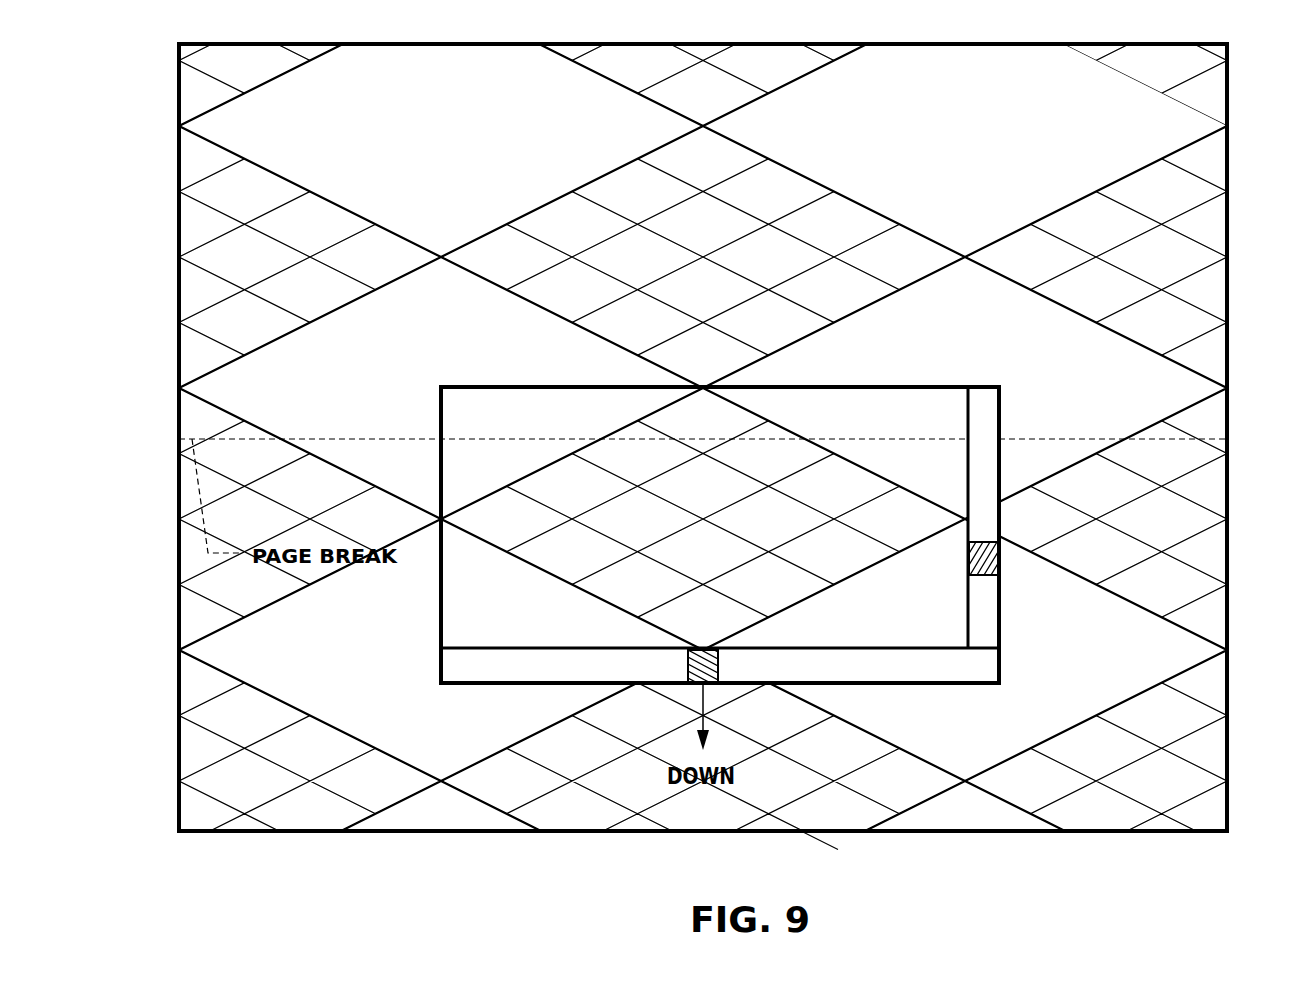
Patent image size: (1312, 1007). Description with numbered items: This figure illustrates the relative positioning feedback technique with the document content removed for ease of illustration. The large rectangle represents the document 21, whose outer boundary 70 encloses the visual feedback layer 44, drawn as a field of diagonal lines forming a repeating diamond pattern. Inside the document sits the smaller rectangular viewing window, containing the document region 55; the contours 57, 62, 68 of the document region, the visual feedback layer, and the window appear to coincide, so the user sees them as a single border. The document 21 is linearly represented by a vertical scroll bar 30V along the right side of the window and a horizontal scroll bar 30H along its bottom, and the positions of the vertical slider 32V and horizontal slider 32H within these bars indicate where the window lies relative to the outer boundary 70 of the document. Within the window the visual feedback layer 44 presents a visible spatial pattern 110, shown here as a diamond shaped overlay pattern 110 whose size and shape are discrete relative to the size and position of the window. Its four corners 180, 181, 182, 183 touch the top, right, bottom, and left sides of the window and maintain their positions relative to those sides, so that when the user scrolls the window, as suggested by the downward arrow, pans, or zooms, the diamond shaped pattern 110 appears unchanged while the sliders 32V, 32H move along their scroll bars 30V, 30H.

The document 21 is at (1228, 127).
The visual feedback layer 44 is at (1205, 226).
The outer boundary 70 is at (1228, 342).
The document region 55 is at (703, 503).
The visible spatial pattern 110 is at (740, 413).
The contour of the document region 57 is at (745, 514).
The contour of the visual feedback layer 62 is at (720, 535).
The contour of the window 68 is at (900, 388).
The vertical scroll bar 30V is at (1001, 535).
The vertical slider 32V is at (983, 575).
The horizontal scroll bar 30H is at (720, 677).
The horizontal slider 32H is at (684, 682).
The corner of the diamond shaped pattern 180 is at (703, 386).
The corner of the diamond shaped pattern 181 is at (967, 520).
The corner of the diamond shaped pattern 182 is at (707, 648).
The corner of the diamond shaped pattern 183 is at (441, 517).